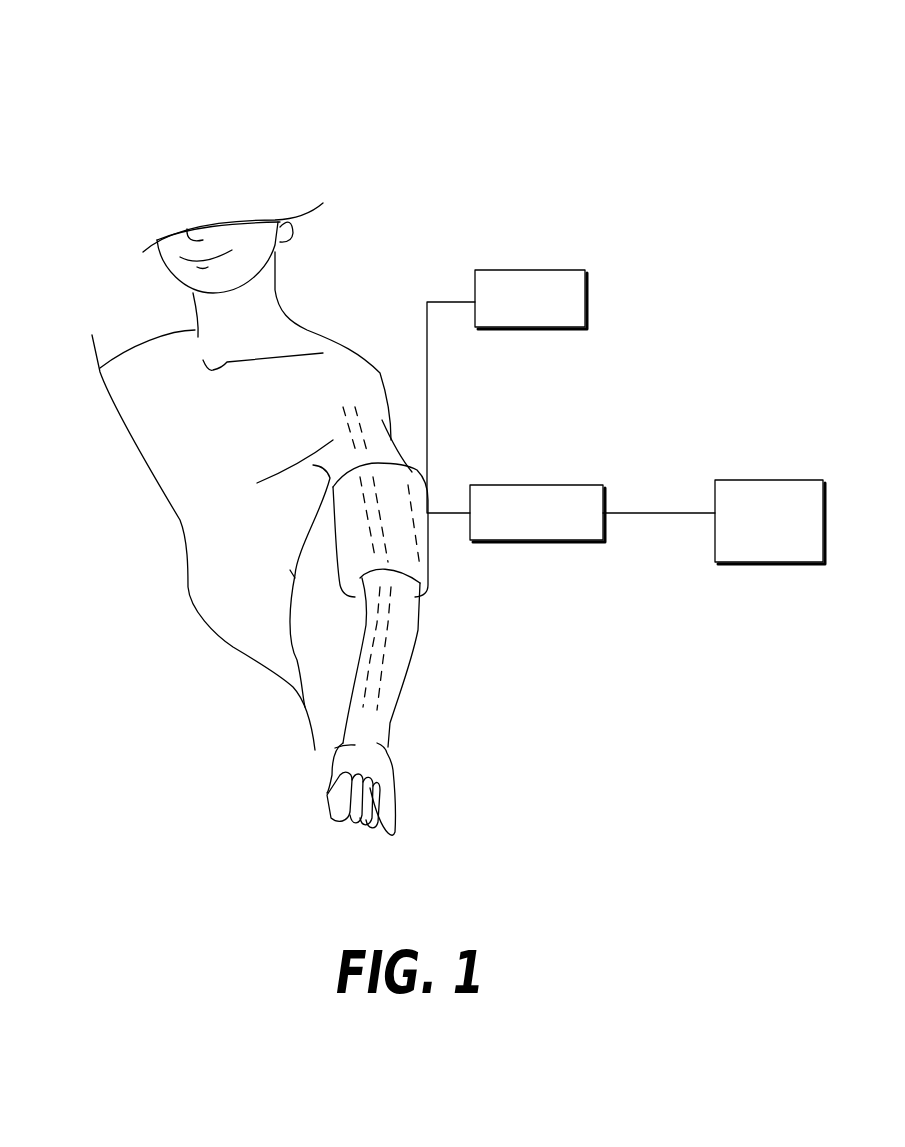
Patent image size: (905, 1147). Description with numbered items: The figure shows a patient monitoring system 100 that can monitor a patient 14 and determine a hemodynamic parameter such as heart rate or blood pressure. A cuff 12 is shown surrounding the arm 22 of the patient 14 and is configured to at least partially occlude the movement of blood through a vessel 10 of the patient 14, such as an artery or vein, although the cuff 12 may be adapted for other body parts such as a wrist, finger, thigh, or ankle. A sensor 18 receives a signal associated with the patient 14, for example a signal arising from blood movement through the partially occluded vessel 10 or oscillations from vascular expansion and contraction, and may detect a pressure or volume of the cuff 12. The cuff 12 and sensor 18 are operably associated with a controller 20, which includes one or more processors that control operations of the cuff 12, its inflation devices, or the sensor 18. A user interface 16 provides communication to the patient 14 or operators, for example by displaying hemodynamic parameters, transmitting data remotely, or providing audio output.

The patient monitoring system 100 is at (446, 84).
The patient 14 is at (113, 265).
The vessel 10 is at (358, 423).
The cuff 12 is at (430, 570).
The arm 22 is at (412, 668).
The sensor 18 is at (563, 270).
The controller 20 is at (560, 485).
The user interface 16 is at (788, 480).